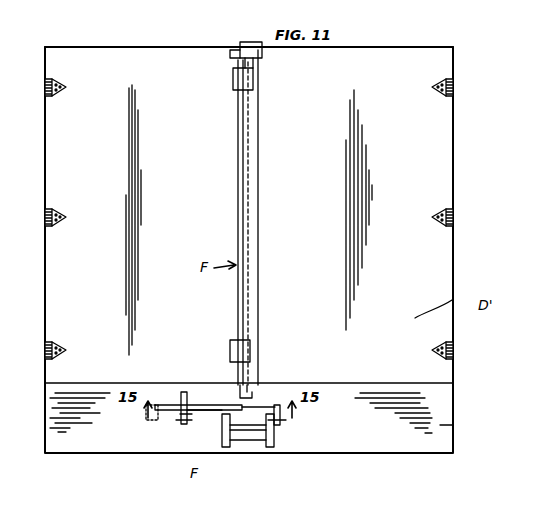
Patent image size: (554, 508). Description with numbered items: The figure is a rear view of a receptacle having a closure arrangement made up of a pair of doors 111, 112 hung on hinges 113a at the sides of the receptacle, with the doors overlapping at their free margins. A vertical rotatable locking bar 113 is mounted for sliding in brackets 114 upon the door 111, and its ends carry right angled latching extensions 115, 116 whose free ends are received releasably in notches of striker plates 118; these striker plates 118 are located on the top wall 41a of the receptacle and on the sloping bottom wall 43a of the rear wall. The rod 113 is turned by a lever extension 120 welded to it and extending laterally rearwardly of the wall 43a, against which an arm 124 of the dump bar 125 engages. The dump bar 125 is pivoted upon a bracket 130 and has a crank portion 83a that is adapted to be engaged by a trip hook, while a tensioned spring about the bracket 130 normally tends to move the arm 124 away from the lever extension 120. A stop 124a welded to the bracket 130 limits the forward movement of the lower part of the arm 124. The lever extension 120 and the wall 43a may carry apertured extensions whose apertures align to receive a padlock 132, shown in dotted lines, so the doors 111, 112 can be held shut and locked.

The top wall 41a is at (126, 47).
The door 111 is at (170, 73).
The door 112 is at (400, 56).
The vertical rotatable locking bar 113 is at (245, 300).
The hinges 113a is at (42, 210).
The brackets 114 is at (238, 82).
The right angled latching extension 115 is at (262, 396).
The right angled latching extension 116 is at (262, 58).
The striker plates 118 is at (262, 48).
The lever extension 120 is at (205, 400).
The arm 124 is at (178, 384).
The stop 124a is at (212, 418).
The dump bar 125 is at (172, 412).
The bracket 130 is at (186, 422).
The padlock 132 is at (148, 418).
The crank portion 83a is at (253, 446).
The sloping bottom wall 43a is at (440, 425).